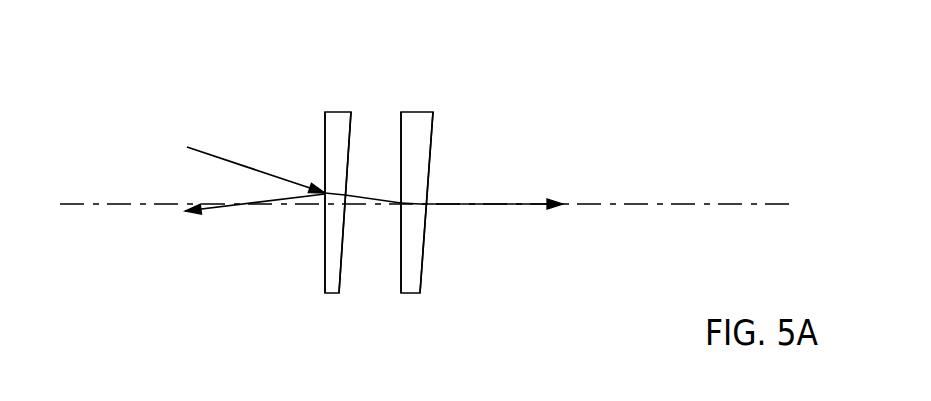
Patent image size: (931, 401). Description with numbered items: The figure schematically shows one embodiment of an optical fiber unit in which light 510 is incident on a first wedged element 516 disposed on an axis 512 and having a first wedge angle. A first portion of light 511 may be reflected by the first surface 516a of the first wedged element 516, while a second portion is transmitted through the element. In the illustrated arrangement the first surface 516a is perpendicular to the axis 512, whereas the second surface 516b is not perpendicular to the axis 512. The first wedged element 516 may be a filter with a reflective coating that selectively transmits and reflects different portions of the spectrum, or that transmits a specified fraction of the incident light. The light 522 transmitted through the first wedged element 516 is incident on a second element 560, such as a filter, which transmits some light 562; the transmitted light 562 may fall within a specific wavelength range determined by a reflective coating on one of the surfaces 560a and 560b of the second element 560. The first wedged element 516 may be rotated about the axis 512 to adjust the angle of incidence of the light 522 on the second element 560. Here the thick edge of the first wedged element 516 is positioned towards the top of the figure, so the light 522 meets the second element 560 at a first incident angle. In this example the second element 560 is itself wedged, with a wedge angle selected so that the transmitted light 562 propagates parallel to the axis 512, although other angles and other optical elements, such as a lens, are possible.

The incident light 510 is at (220, 155).
The first portion of light 511 is at (231, 205).
The axis 512 is at (83, 203).
The first wedged element 516 is at (339, 111).
The first surface 516a is at (322, 130).
The second surface 516b is at (338, 288).
The transmitted light 522 is at (355, 198).
The second element 560 is at (411, 112).
The surface of second element 560a is at (400, 280).
The surface of second element 560b is at (433, 128).
The transmitted light 562 is at (532, 204).